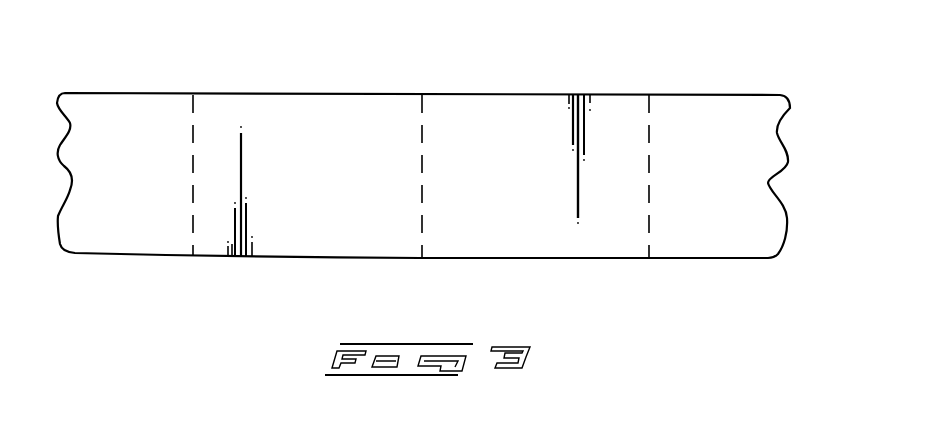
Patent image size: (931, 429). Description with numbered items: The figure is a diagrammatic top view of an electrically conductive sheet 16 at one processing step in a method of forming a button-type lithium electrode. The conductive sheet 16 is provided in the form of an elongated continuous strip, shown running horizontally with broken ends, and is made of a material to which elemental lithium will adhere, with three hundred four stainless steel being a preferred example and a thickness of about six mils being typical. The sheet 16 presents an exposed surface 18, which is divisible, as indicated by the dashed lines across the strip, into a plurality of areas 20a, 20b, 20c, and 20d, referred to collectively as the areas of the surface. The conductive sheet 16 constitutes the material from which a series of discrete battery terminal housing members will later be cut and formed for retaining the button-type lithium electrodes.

The electrically conductive sheet 16 is at (91, 218).
The exposed surface 18 is at (155, 216).
The area 20a is at (108, 142).
The area 20b is at (305, 137).
The area 20c is at (537, 132).
The area 20d is at (732, 142).